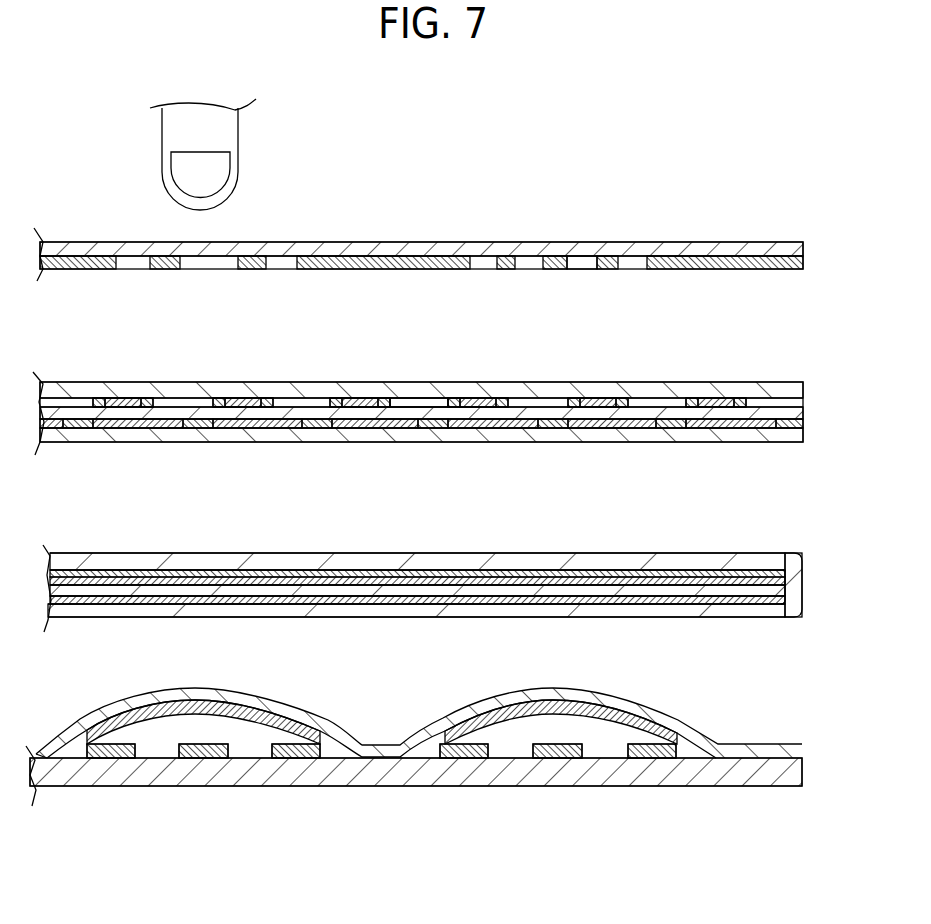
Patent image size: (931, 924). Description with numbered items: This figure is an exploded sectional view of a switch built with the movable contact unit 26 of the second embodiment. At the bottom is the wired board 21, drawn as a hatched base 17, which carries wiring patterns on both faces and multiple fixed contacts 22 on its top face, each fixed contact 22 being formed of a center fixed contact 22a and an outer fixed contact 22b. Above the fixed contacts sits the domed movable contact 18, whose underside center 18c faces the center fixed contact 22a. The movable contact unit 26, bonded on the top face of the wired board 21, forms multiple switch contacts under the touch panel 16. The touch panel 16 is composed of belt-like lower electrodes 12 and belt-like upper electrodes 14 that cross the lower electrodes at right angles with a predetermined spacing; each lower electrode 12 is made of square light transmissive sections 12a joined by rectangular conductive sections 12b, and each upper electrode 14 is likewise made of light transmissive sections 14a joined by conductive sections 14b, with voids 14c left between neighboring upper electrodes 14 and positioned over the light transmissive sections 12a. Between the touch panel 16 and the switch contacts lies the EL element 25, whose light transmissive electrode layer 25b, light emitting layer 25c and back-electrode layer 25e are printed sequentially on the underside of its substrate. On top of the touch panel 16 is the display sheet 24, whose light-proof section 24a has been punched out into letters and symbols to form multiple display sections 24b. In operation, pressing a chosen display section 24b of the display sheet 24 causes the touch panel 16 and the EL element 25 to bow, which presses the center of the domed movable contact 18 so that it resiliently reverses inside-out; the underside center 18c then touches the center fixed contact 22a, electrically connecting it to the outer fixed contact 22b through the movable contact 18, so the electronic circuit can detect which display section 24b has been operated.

The lower electrode 12 is at (421, 432).
The light transmissive section 12a is at (133, 428).
The conductive section 12b is at (117, 478).
The upper electrode 14 is at (419, 351).
The light transmissive section 14a is at (330, 398).
The conductive section 14b is at (363, 400).
The void 14c is at (419, 366).
The touch panel 16 is at (443, 414).
The substrate 17 is at (753, 750).
The movable contact 18 is at (177, 722).
The underside center 18c is at (200, 717).
The wired board 21 is at (663, 759).
The fixed contact 22 is at (336, 817).
The center fixed contact 22a is at (549, 792).
The outer fixed contact 22b is at (463, 756).
The display sheet 24 is at (418, 230).
The light-proof section 24a is at (415, 254).
The display section 24b is at (578, 254).
The EL element 25 is at (448, 567).
The light transmissive electrode layer 25b is at (288, 572).
The light emitting layer 25c is at (410, 580).
The back-electrode layer 25e is at (557, 598).
The movable contact unit 26 is at (851, 372).